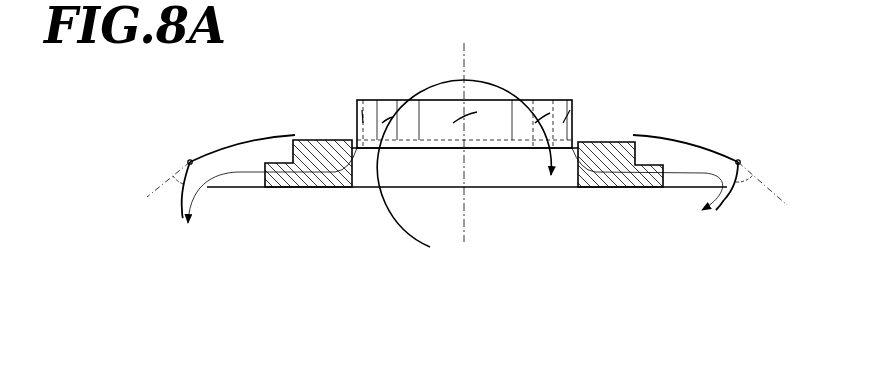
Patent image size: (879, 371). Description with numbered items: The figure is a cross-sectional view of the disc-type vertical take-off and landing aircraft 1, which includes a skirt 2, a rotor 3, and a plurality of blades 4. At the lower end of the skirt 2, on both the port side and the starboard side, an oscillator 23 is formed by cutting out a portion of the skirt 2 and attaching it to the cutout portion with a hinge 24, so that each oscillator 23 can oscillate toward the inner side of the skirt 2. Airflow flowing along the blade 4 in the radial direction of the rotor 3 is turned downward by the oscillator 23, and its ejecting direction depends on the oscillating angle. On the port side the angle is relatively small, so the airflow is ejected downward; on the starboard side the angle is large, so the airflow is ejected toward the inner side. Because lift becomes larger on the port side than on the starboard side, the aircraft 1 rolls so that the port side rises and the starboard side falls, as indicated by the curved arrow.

The disc-type vertical take-off and landing aircraft 1 is at (586, 71).
The skirt 2 is at (209, 152).
The rotor 3 is at (522, 188).
The blade 4 is at (311, 140).
The oscillator 23 is at (179, 222).
The hinge 24 is at (185, 155).